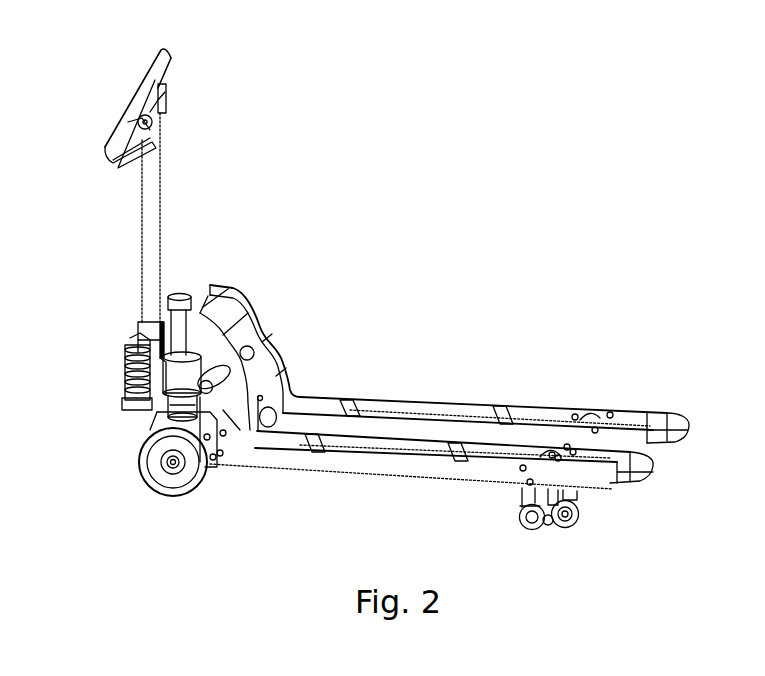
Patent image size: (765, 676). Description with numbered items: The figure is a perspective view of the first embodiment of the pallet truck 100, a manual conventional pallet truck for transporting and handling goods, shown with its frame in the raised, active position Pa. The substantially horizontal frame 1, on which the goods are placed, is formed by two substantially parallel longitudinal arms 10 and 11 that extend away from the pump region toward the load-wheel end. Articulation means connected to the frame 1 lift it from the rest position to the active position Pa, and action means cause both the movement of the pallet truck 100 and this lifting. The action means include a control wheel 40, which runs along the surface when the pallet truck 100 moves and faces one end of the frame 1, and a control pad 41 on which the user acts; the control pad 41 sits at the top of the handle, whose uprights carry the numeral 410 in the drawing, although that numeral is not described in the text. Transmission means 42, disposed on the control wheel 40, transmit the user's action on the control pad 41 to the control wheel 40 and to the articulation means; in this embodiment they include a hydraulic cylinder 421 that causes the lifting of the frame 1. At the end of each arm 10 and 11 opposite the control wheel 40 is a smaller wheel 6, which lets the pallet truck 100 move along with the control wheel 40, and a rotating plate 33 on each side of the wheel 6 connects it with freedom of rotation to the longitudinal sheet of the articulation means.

The frame 1 is at (557, 308).
The pallet truck 100 is at (288, 218).
The control pad 41 is at (110, 123).
The handle rods 410 is at (152, 227).
The transmission means 42 is at (124, 338).
The hydraulic cylinder 421 is at (180, 333).
The control wheel 40 is at (160, 445).
The active position Pa is at (373, 312).
The arm 10 is at (353, 477).
The arm 11 is at (423, 400).
The rotating plate 33 is at (542, 498).
The wheel 6 is at (577, 502).